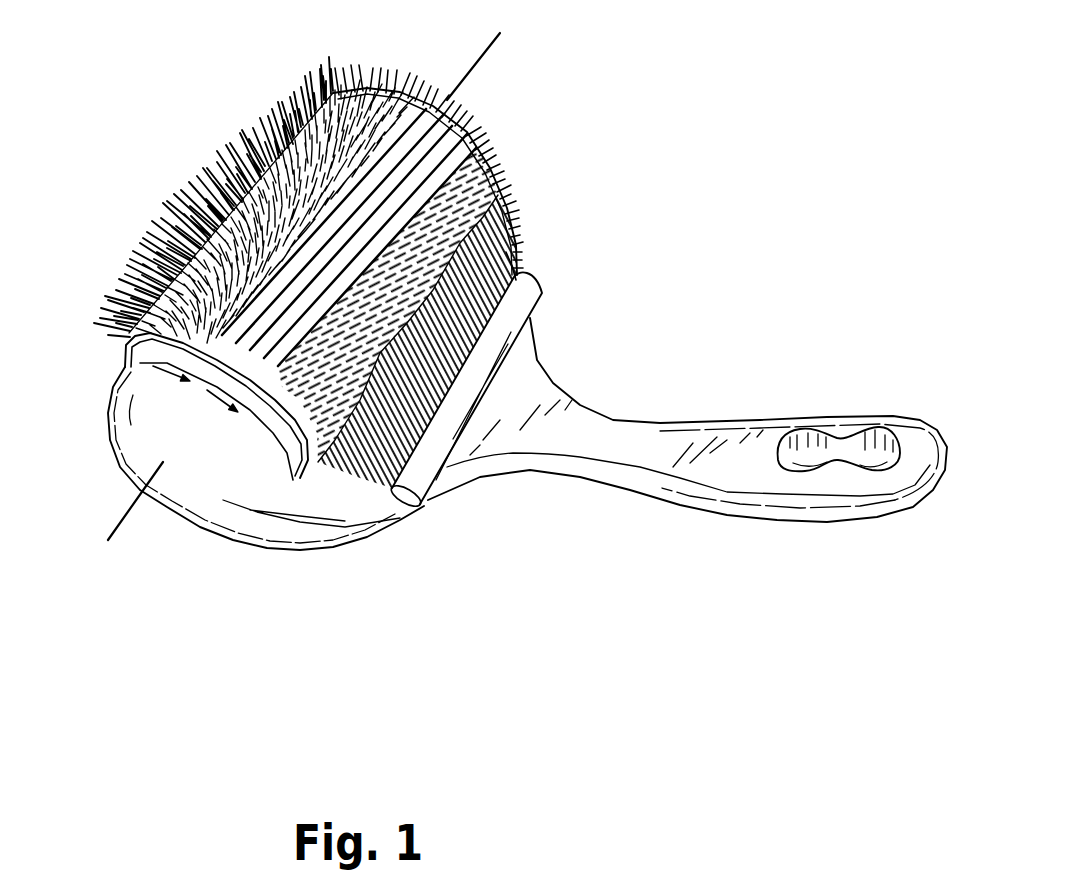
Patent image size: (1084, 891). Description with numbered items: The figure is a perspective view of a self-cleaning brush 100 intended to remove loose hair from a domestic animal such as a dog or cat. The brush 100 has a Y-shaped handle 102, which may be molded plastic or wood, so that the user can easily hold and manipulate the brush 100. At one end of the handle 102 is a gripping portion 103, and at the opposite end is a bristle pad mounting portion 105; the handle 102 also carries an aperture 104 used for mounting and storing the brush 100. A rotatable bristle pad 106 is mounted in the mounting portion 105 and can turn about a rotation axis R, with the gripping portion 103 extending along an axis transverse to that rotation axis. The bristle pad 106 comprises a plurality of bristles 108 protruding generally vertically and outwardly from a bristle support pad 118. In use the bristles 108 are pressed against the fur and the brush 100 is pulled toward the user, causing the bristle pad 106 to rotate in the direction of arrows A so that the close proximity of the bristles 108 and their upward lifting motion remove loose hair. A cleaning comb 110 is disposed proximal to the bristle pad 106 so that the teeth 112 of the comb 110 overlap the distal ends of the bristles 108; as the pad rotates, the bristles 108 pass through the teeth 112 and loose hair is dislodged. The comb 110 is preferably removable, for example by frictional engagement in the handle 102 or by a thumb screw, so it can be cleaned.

The brush 100 is at (567, 117).
The handle 102 is at (707, 437).
The gripping portion 103 is at (707, 473).
The aperture 104 is at (805, 447).
The bristle pad mounting portion 105 is at (213, 490).
The rotatable bristle pad 106 is at (117, 292).
The bristles 108 is at (220, 170).
The cleaning comb 110 is at (547, 283).
The teeth 112 is at (510, 260).
The bristle support pad 118 is at (282, 387).